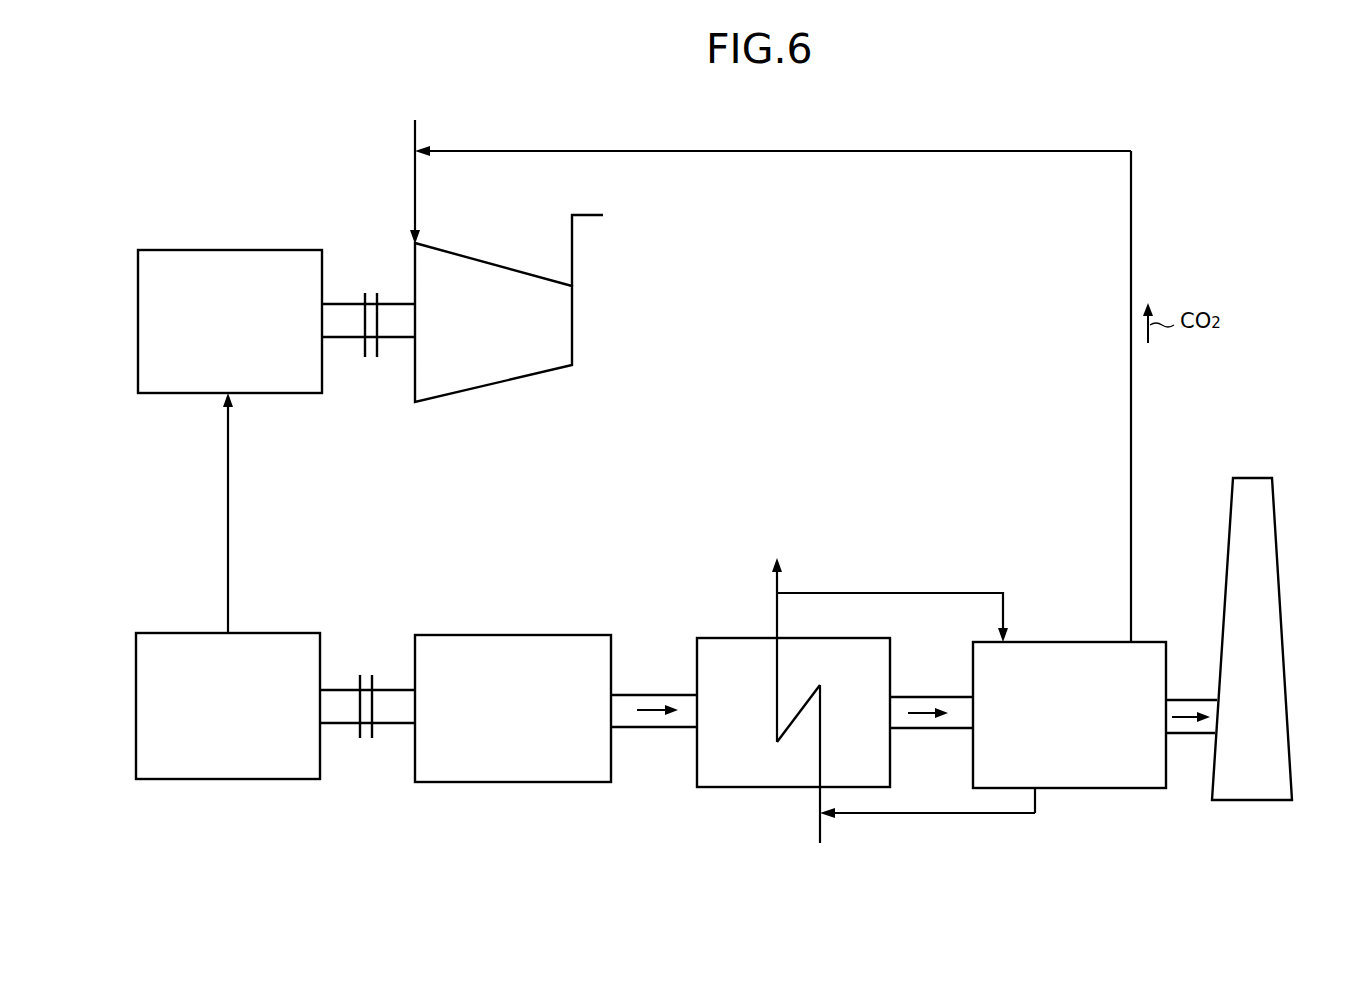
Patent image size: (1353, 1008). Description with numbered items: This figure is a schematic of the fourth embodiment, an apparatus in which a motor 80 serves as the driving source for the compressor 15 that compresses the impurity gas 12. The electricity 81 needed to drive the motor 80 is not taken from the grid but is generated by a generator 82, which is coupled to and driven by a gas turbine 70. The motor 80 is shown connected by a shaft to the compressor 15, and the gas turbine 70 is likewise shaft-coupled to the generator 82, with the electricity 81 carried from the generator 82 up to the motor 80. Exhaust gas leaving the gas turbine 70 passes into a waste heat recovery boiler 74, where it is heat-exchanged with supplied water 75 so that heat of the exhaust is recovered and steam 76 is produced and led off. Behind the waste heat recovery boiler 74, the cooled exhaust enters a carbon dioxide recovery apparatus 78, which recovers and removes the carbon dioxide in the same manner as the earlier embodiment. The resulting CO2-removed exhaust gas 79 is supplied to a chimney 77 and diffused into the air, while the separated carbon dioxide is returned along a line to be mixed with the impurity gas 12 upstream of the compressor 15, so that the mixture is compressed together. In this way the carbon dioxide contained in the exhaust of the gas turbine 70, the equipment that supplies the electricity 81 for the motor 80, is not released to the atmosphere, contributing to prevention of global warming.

The impurity gas 12 is at (415, 134).
The compressor 15 is at (497, 385).
The gas turbine 70 is at (517, 635).
The waste heat recovery boiler 74 is at (733, 787).
The water 75 is at (905, 791).
The steam 76 is at (867, 635).
The chimney 77 is at (1275, 505).
The carbon dioxide recovery apparatus 78 is at (1112, 788).
The CO2-removed exhaust gas 79 is at (1185, 710).
The motor 80 is at (227, 250).
The electricity 81 is at (228, 508).
The generator 82 is at (230, 779).